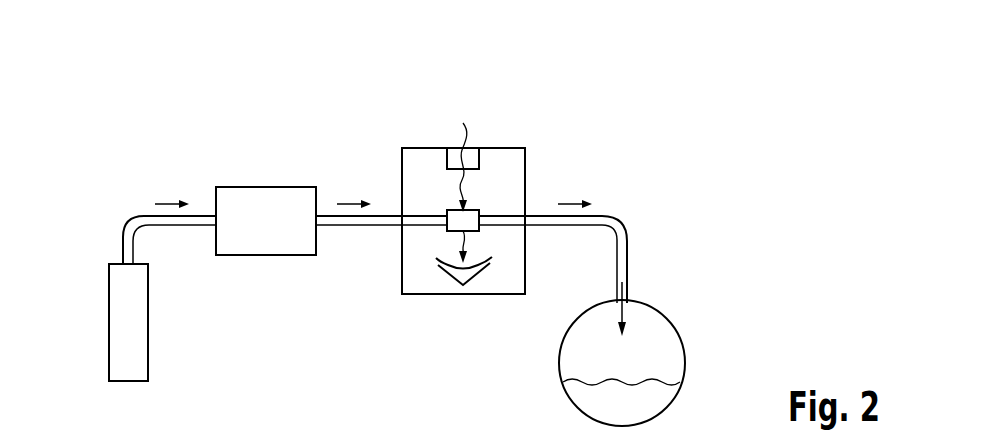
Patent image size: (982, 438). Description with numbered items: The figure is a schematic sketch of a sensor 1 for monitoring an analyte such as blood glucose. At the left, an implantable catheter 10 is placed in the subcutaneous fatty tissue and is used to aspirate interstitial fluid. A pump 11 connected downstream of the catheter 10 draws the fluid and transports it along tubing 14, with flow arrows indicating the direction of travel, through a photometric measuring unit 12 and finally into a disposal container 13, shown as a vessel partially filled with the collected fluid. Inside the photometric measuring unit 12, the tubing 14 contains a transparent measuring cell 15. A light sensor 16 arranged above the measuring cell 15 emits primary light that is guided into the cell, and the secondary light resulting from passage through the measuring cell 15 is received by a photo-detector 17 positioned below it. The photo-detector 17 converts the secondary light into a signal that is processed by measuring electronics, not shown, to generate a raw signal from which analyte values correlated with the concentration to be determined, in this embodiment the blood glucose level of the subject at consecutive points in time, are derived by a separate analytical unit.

The sensor 1 is at (246, 130).
The implantable catheter 10 is at (148, 348).
The pump 11 is at (264, 256).
The photometric measuring unit 12 is at (417, 148).
The disposal container 13 is at (678, 330).
The tubing 14 is at (360, 226).
The transparent measuring cell 15 is at (474, 210).
The light sensor 16 is at (480, 158).
The photo-detector 17 is at (450, 276).